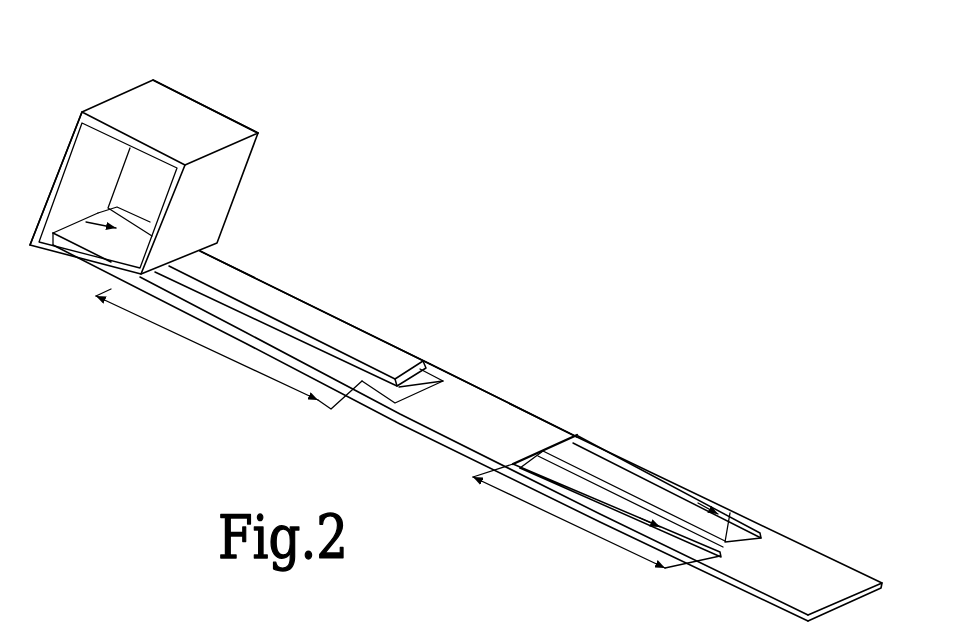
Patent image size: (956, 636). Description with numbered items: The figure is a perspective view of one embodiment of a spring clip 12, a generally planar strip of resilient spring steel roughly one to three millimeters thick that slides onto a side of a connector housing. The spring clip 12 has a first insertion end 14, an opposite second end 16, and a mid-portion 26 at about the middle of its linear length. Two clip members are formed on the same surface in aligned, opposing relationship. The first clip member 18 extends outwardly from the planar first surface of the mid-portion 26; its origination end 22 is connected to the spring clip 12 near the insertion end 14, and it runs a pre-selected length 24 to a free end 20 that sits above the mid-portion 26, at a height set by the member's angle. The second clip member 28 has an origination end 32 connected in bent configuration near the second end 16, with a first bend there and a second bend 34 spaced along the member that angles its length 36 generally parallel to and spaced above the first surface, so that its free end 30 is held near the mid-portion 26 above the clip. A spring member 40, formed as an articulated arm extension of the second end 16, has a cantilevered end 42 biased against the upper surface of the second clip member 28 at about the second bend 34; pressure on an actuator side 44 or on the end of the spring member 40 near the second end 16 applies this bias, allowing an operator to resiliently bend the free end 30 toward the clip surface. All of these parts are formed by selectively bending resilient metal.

The spring clip 12 is at (433, 437).
The first insertion end 14 is at (848, 603).
The second end 16 is at (30, 243).
The first clip member 18 is at (633, 480).
The free end 20 is at (578, 433).
The origination end 22 is at (728, 537).
The length 24 is at (563, 523).
The mid-portion 26 is at (483, 417).
The second clip member 28 is at (318, 323).
The free end 30 is at (425, 365).
The origination end 32 is at (93, 237).
The second bend 34 is at (97, 243).
The length 36 is at (217, 353).
The spring member 40 is at (96, 93).
The cantilevered end 42 is at (217, 253).
The actuator side 44 is at (203, 122).